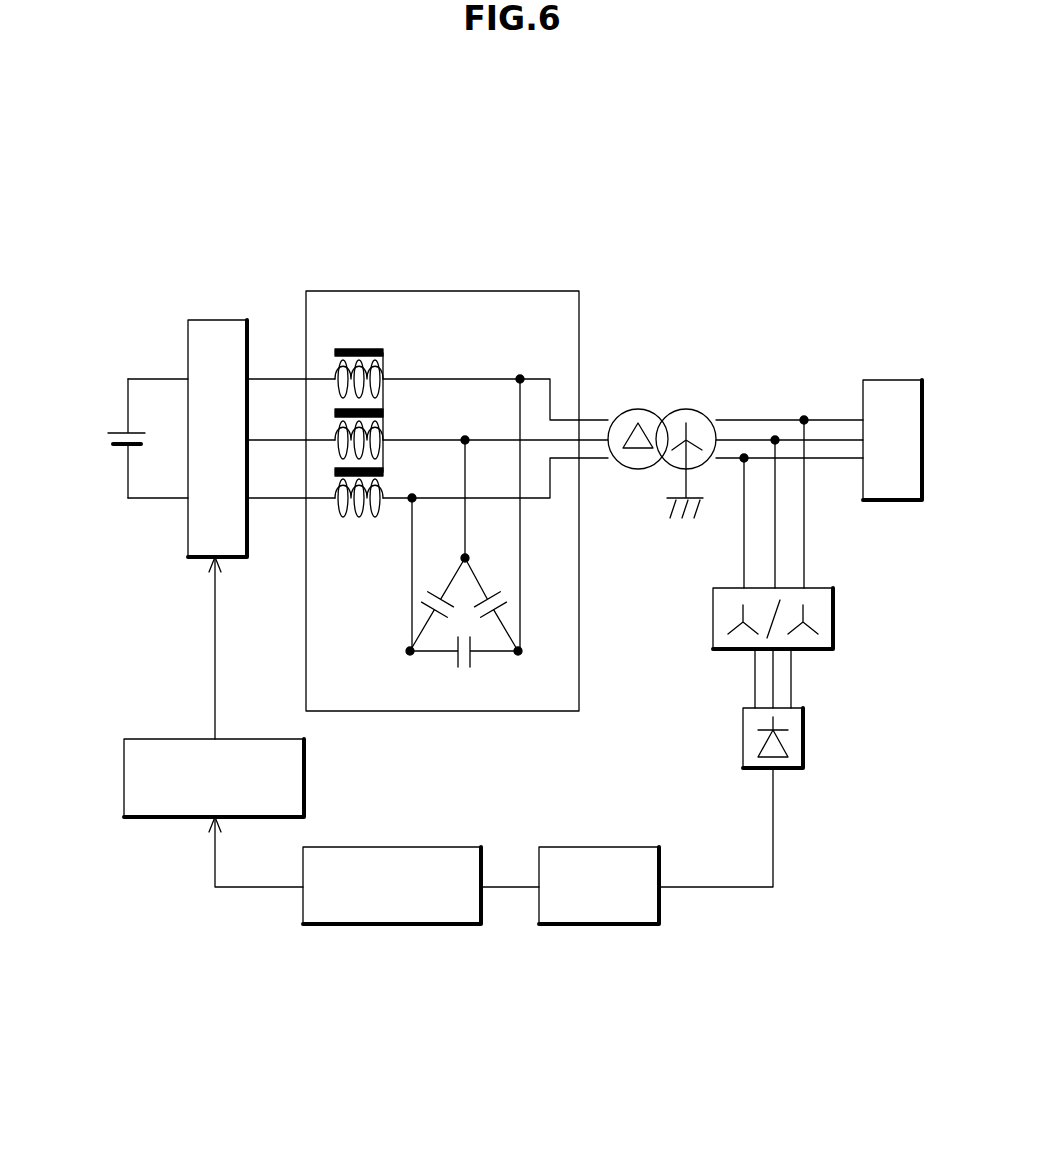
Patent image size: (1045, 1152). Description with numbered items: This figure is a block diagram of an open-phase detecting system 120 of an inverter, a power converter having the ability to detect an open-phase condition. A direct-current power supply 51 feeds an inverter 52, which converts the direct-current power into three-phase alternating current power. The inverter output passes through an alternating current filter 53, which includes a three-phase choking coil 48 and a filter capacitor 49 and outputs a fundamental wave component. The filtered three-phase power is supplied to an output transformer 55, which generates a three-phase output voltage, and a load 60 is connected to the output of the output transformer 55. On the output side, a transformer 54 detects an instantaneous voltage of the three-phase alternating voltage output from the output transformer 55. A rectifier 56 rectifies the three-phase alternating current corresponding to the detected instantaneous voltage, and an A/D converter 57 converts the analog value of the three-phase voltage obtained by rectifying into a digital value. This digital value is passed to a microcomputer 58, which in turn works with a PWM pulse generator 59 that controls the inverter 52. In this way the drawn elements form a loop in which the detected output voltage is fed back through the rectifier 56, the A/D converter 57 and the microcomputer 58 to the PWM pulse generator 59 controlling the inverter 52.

The open-phase detecting system 120 is at (455, 180).
The direct-current power supply 51 is at (112, 423).
The inverter 52 is at (223, 320).
The alternating current filter 53 is at (403, 291).
The three-phase choking coil 48 is at (380, 340).
The filter capacitor 49 is at (418, 658).
The output transformer 55 is at (660, 407).
The load 60 is at (900, 380).
The transformer 54 is at (835, 609).
The rectifier 56 is at (803, 727).
The A/D converter 57 is at (610, 924).
The microcomputer 58 is at (413, 924).
The PWM pulse generator 59 is at (304, 768).